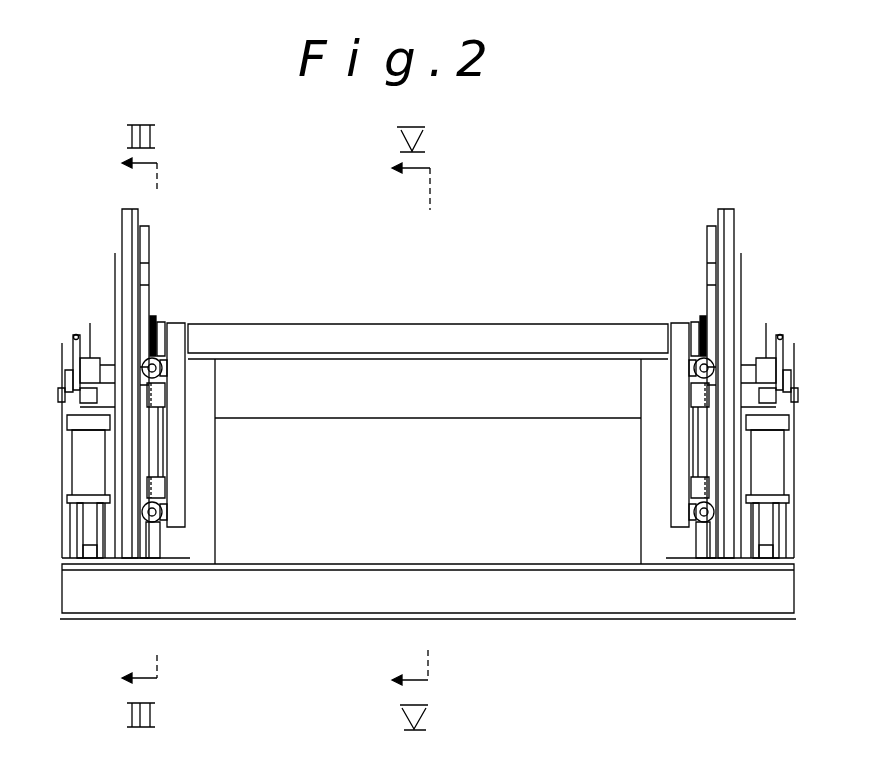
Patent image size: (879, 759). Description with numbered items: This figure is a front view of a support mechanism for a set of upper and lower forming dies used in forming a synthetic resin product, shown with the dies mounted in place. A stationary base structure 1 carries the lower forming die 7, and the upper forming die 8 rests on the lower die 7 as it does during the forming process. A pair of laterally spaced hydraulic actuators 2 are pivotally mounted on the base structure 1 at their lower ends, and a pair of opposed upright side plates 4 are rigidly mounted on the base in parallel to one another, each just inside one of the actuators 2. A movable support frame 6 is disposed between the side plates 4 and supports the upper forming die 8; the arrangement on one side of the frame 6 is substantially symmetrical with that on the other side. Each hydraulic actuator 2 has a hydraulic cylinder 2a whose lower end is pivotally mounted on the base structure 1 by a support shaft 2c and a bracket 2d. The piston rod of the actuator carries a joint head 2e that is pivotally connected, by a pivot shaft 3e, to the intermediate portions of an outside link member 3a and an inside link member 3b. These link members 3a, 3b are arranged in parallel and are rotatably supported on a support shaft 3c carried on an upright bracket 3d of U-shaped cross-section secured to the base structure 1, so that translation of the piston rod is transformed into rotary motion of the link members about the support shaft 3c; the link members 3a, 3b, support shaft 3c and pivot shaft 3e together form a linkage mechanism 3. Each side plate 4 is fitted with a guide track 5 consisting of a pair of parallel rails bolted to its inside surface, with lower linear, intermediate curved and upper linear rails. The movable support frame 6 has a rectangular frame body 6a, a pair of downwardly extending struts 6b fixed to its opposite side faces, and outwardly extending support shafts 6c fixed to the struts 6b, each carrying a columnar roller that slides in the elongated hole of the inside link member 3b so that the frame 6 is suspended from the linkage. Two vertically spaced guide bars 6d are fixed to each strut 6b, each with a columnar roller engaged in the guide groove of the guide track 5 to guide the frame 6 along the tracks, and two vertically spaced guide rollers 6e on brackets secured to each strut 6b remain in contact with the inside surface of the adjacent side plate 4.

The stationary base structure 1 is at (477, 602).
The hydraulic actuator 2 is at (68, 442).
The hydraulic cylinder 2a is at (85, 467).
The support shaft 2c is at (78, 532).
The bracket 2d is at (90, 550).
The joint head 2e is at (90, 338).
The linkage mechanism 3 is at (73, 345).
The outside link member 3a is at (75, 335).
The inside link member 3b is at (152, 316).
The support shaft 3c is at (58, 398).
The upright bracket 3d is at (65, 383).
The pivot shaft 3e is at (115, 277).
The upright side plate 4 is at (125, 208).
The guide track 5 is at (151, 238).
The movable support frame 6 is at (365, 322).
The rectangular frame body 6a is at (472, 335).
The strut 6b is at (175, 330).
The support shaft 6c is at (160, 325).
The guide bar 6d is at (165, 490).
The guide roller 6e is at (160, 362).
The lower forming die 7 is at (540, 550).
The upper forming die 8 is at (532, 377).